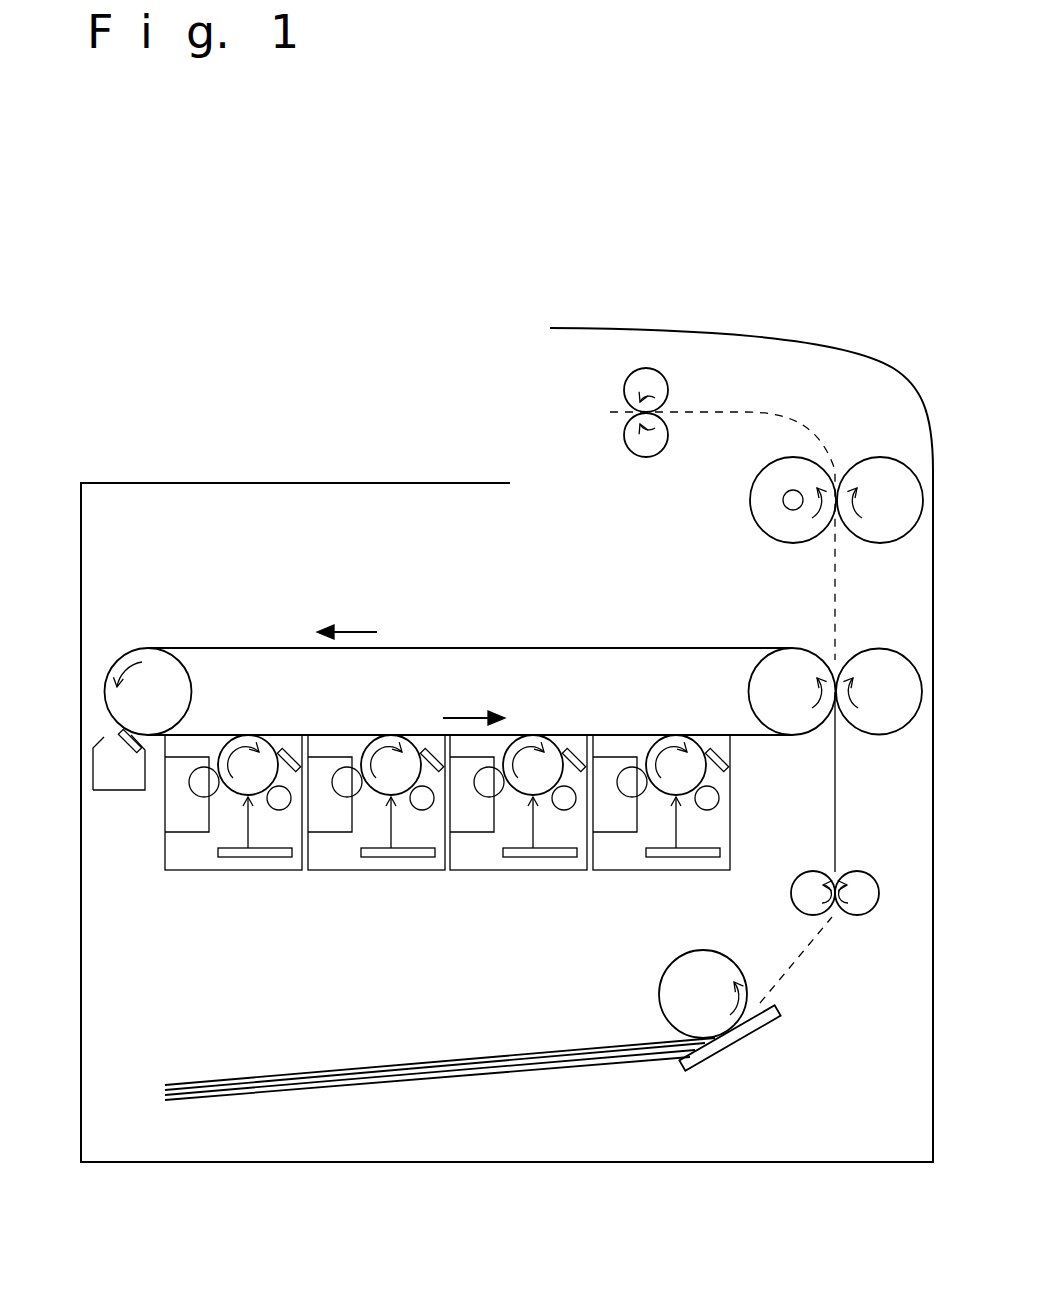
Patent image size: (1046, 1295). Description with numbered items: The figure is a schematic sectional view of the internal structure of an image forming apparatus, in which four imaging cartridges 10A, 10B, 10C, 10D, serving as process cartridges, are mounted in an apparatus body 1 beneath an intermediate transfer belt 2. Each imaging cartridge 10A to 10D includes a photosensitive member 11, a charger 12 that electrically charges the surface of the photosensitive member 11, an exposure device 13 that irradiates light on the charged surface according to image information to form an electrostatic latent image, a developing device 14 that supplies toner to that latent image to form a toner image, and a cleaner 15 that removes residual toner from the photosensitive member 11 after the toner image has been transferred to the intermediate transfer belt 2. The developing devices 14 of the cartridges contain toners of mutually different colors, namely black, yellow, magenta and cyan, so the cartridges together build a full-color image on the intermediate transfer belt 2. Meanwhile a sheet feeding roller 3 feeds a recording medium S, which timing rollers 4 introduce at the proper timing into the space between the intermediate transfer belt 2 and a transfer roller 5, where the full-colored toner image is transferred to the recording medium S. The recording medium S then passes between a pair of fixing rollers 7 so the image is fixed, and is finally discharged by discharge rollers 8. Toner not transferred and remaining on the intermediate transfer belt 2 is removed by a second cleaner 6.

The apparatus body 1 is at (507, 745).
The intermediate transfer belt 2 is at (203, 648).
The sheet feeding roller 3 is at (682, 1010).
The timing rollers 4 is at (808, 915).
The transfer roller 5 is at (898, 735).
The second cleaner 6 is at (113, 790).
The fixing rollers 7 is at (808, 470).
The discharge rollers 8 is at (658, 435).
The imaging cartridge 10A is at (233, 848).
The imaging cartridge 10B is at (376, 848).
The imaging cartridge 10C is at (518, 848).
The imaging cartridge 10D is at (661, 848).
The photosensitive member 11 is at (258, 748).
The charger 12 is at (280, 800).
The exposure device 13 is at (227, 853).
The developing device 14 is at (187, 820).
The cleaner 15 is at (293, 750).
The recording medium S is at (235, 1078).